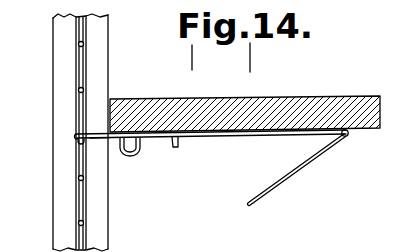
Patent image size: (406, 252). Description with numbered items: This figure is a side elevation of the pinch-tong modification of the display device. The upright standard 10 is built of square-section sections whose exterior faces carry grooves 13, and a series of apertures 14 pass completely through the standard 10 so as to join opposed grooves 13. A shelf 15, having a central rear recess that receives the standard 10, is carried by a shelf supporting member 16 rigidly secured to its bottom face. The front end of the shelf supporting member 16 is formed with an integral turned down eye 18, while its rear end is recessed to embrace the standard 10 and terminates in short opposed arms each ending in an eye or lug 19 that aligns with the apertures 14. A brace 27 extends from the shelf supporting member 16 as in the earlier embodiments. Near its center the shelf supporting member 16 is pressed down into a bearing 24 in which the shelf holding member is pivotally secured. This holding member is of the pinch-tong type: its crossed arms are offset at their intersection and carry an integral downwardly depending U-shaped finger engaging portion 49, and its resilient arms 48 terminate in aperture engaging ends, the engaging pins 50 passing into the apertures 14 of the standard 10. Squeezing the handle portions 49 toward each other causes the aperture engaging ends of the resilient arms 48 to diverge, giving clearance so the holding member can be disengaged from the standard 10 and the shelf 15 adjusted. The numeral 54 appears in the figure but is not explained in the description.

The standard 10 is at (58, 41).
The grooves 13 is at (112, 70).
The apertures 14 is at (84, 44).
The shelves 15 is at (353, 103).
The shelf supporting member 16 is at (251, 135).
The turned down eye 18 is at (348, 137).
The eye or lug 19 is at (75, 136).
The downwardly depressed portion or bearing 24 is at (177, 147).
The brace 27 is at (288, 177).
The resilient arms 48 is at (100, 140).
The U-shaped finger engaging portion 49 is at (128, 157).
The engaging pins 50 is at (80, 145).
The lower element (cut off) 54 is at (296, 246).